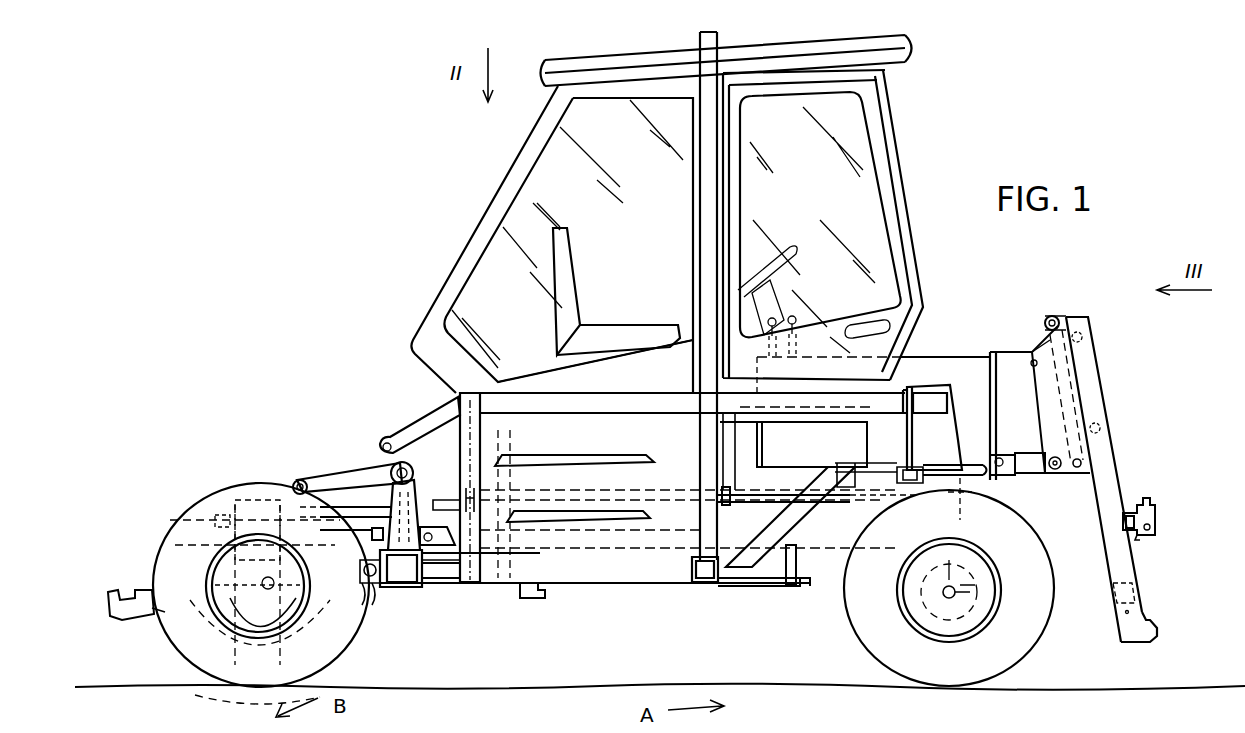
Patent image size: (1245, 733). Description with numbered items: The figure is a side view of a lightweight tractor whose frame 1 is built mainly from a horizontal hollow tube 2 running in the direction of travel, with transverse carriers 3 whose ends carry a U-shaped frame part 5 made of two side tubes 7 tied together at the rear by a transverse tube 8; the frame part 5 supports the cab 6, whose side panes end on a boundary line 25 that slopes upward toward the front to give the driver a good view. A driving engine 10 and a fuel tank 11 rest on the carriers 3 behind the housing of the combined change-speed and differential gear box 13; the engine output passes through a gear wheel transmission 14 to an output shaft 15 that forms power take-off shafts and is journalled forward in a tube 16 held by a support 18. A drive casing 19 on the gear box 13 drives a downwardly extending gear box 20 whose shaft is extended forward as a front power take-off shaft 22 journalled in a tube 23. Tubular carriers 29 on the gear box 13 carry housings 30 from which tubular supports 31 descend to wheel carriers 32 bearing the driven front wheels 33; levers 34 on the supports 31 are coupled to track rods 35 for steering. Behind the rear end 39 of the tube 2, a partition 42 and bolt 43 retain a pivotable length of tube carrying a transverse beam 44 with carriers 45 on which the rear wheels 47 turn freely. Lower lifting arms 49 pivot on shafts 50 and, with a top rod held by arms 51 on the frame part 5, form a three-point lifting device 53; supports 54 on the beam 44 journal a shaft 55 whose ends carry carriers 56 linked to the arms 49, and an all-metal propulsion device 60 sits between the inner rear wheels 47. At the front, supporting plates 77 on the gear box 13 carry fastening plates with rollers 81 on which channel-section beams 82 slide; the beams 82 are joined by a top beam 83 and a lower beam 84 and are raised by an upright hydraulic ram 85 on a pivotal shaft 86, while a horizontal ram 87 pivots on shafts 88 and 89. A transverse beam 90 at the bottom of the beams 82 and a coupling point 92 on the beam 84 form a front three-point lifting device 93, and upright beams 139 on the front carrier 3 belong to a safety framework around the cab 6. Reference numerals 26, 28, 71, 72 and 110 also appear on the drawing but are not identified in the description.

The frame 1 is at (598, 520).
The hollow tube 2 is at (726, 583).
The carriers 3 is at (531, 602).
The U-shaped frame part 5 is at (582, 427).
The cab 6 is at (920, 137).
The tubes 7 is at (622, 395).
The tube 8 is at (452, 407).
The driving engine 10 is at (457, 590).
The fuel tank 11 is at (612, 578).
The combined change speed and differential gear box 13 is at (922, 354).
The gear wheel transmission 14 is at (458, 470).
The output shaft 15 is at (446, 500).
The tube 16 is at (540, 497).
The support 18 is at (842, 468).
The drive casing 19 is at (770, 443).
The gear box 20 is at (743, 436).
The front power take-off shaft 22 is at (972, 498).
The tube 23 is at (380, 520).
The boundary line 25 is at (545, 376).
The seat backrest 26 is at (468, 332).
The plate 28 is at (1035, 368).
The tubular carriers 29 is at (1045, 387).
The housings 30 is at (942, 394).
The tubular supports 31 is at (920, 527).
The wheel carriers 32 is at (998, 603).
The front wheel 33 is at (868, 640).
The levers 34 is at (966, 456).
The track rods 35 is at (906, 468).
The rear end 39 is at (490, 600).
The partition 42 is at (798, 528).
The bolt 43 is at (796, 586).
The beam 44 is at (406, 618).
The carriers 45 is at (188, 566).
The rear wheel 47 is at (204, 503).
The lower lifting arms 49 is at (136, 590).
The pivotal shafts 50 is at (386, 590).
The arms 51 is at (396, 430).
The three-point lifting device 53 is at (305, 464).
The supports 54 is at (412, 586).
The shaft 55 is at (392, 462).
The carrier 56 is at (326, 474).
The propulsion device 60 is at (205, 697).
The axle axis 71 is at (215, 521).
The pivot 72 is at (262, 478).
The supporting plates 77 is at (998, 354).
The rollers 81 is at (1092, 337).
The channel-section beams 82 is at (1106, 490).
The beam 83 is at (1082, 318).
The beam 84 is at (1140, 540).
The hydraulic ram 85 is at (1098, 371).
The pivotal shaft 86 is at (1076, 480).
The hydraulic ram 87 is at (1034, 475).
The pivotal shaft 88 is at (1027, 462).
The pivotal shaft 89 is at (1052, 478).
The transverse beam 90 is at (1142, 586).
The coupling point 92 is at (1152, 512).
The three-point lifting device 93 is at (1168, 616).
The roof bar 110 is at (697, 42).
The beams 139 is at (700, 198).